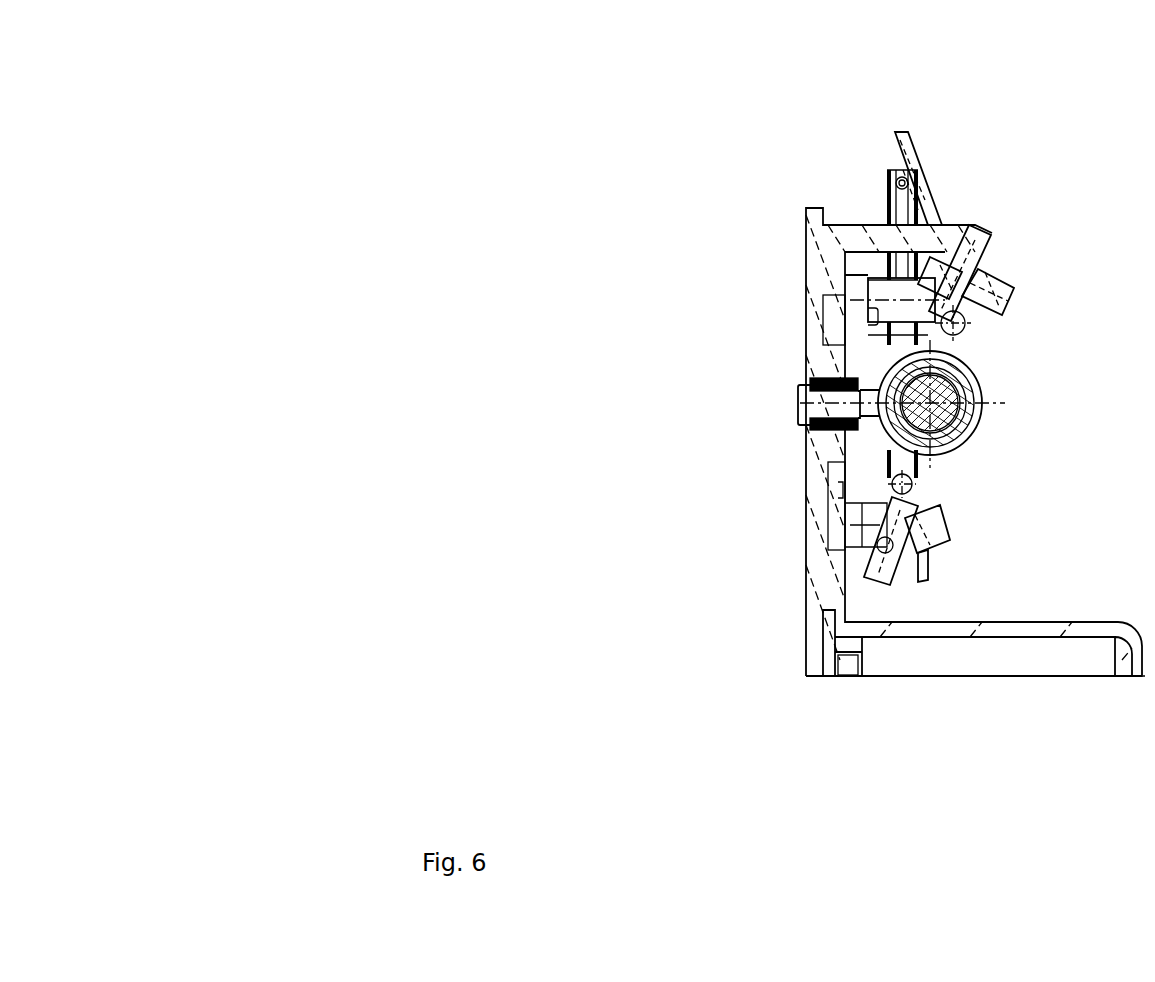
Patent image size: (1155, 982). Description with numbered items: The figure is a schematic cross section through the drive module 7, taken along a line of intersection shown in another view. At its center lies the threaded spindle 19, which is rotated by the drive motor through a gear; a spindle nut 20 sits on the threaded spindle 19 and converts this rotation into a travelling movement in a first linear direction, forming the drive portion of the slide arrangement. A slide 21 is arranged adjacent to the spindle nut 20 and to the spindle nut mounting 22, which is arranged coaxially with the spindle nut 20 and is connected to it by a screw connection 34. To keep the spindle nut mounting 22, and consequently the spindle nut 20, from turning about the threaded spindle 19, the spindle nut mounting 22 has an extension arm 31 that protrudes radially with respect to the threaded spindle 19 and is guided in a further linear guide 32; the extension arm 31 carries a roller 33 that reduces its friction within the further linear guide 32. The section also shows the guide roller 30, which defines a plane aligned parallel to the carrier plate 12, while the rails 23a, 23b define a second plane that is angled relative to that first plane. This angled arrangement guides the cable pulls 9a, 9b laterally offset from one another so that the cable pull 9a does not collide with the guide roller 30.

The drive module 7 is at (758, 165).
The cable pull 9a is at (967, 328).
The cable pull 9b is at (900, 178).
The carrier plate 12 is at (810, 278).
The threaded spindle 19 is at (985, 406).
The spindle nut 20 is at (965, 435).
The slide 21 is at (993, 298).
The spindle nut mounting 22 is at (988, 383).
The rail 23a is at (975, 266).
The rail 23b is at (885, 548).
The guide roller 30 is at (886, 200).
The extension arm 31 is at (820, 405).
The further linear guide 32 is at (825, 380).
The roller 33 is at (820, 425).
The screw connection 34 is at (980, 427).